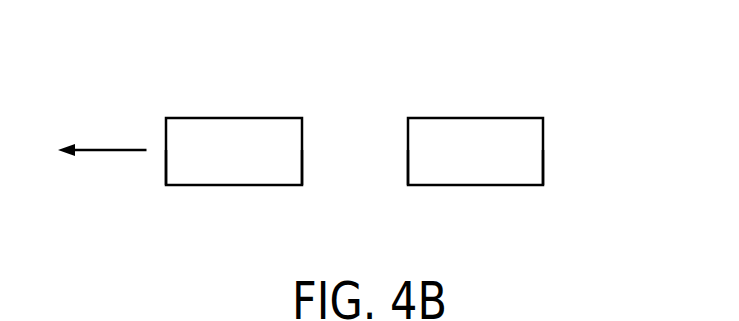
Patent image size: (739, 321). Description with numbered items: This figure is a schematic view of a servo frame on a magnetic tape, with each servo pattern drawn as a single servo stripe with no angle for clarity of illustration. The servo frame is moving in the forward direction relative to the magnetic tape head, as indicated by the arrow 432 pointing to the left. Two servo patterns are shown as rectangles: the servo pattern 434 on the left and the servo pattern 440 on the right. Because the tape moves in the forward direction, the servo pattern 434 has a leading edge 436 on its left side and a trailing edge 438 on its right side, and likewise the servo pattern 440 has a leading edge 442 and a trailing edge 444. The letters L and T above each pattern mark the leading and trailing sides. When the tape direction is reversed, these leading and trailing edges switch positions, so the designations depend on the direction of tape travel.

The arrow 432 is at (116, 148).
The servo pattern 434 is at (215, 113).
The leading edge 436 is at (166, 162).
The trailing edge 438 is at (302, 162).
The servo pattern 440 is at (455, 115).
The leading edge 442 is at (408, 162).
The trailing edge 444 is at (543, 158).